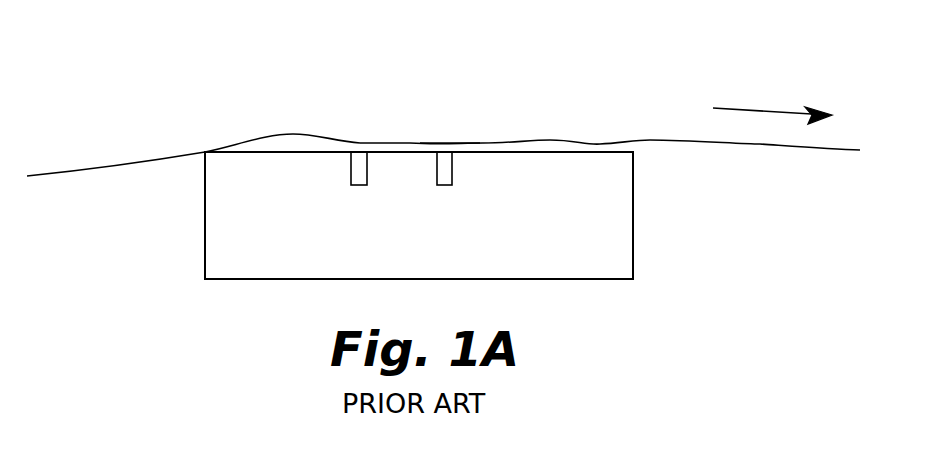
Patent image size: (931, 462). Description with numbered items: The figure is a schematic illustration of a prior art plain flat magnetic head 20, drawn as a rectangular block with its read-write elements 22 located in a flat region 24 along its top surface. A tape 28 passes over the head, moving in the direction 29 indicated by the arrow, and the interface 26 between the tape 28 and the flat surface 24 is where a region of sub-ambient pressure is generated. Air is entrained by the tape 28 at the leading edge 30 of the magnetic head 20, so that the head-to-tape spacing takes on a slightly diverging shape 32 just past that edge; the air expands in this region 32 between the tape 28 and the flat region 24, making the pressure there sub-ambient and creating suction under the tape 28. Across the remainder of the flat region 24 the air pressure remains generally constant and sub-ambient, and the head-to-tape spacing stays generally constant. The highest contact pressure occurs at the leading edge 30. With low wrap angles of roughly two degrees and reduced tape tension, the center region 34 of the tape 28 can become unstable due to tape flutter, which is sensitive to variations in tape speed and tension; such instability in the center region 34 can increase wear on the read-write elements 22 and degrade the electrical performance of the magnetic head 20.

The plain flat magnetic head 20 is at (220, 256).
The read-write elements 22 is at (357, 188).
The flat region 24 is at (600, 143).
The interface 26 is at (425, 130).
The tape 28 is at (48, 168).
The direction 29 is at (757, 110).
The leading edge 30 is at (202, 158).
The slightly diverging shape 32 is at (272, 143).
The center region 34 is at (399, 143).